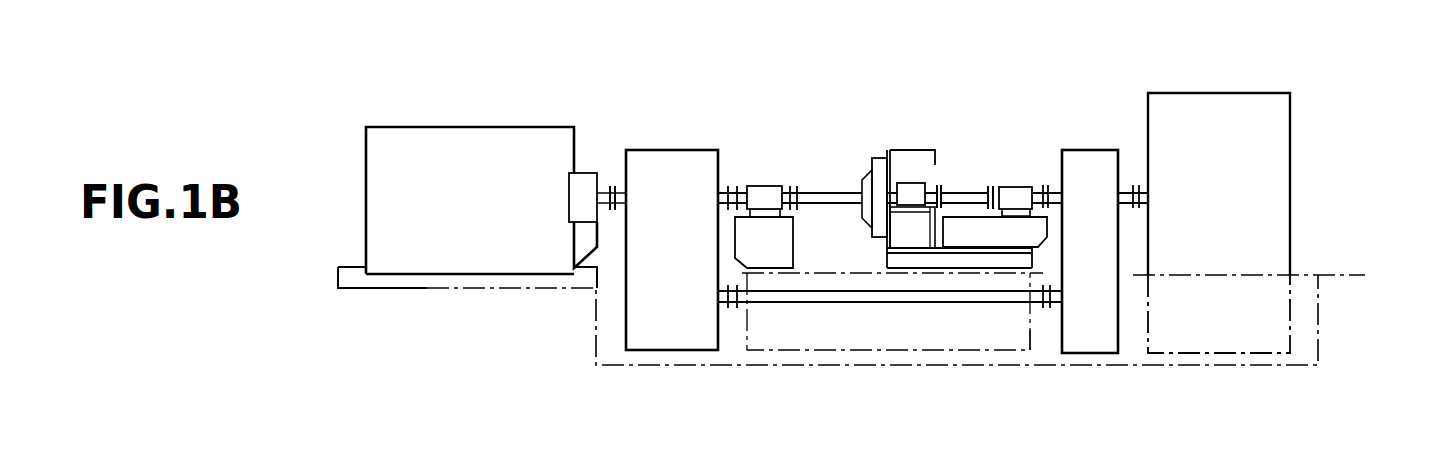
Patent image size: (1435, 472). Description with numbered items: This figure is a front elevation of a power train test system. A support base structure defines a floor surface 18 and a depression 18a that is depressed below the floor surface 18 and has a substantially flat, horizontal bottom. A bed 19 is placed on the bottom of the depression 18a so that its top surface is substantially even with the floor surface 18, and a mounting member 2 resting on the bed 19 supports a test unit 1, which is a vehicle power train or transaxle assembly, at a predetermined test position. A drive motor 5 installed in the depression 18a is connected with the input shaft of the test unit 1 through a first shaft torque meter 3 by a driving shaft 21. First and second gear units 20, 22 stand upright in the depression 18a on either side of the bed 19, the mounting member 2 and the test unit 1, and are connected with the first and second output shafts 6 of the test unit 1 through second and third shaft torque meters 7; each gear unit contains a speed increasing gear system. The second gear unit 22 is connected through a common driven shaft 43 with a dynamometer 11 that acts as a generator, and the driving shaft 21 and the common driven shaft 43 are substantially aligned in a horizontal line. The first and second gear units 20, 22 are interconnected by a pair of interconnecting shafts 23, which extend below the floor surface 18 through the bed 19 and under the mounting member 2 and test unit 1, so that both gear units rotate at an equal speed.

The dynamometer 11 is at (480, 133).
The common driven shaft 43 is at (613, 185).
The second gear unit 22 is at (670, 150).
The shaft torque meter 7 is at (757, 186).
The output shaft 6 is at (807, 193).
The test unit 1 is at (866, 165).
The mounting member 2 is at (915, 150).
The first shaft torque meter 3 is at (910, 184).
The driving shaft 21 is at (950, 187).
The first gear unit 20 is at (1077, 150).
The drive motor 5 is at (1212, 93).
The floor surface 18 is at (860, 272).
The depression 18a is at (608, 365).
The interconnecting shaft 23 is at (950, 303).
The bed 19 is at (1013, 323).